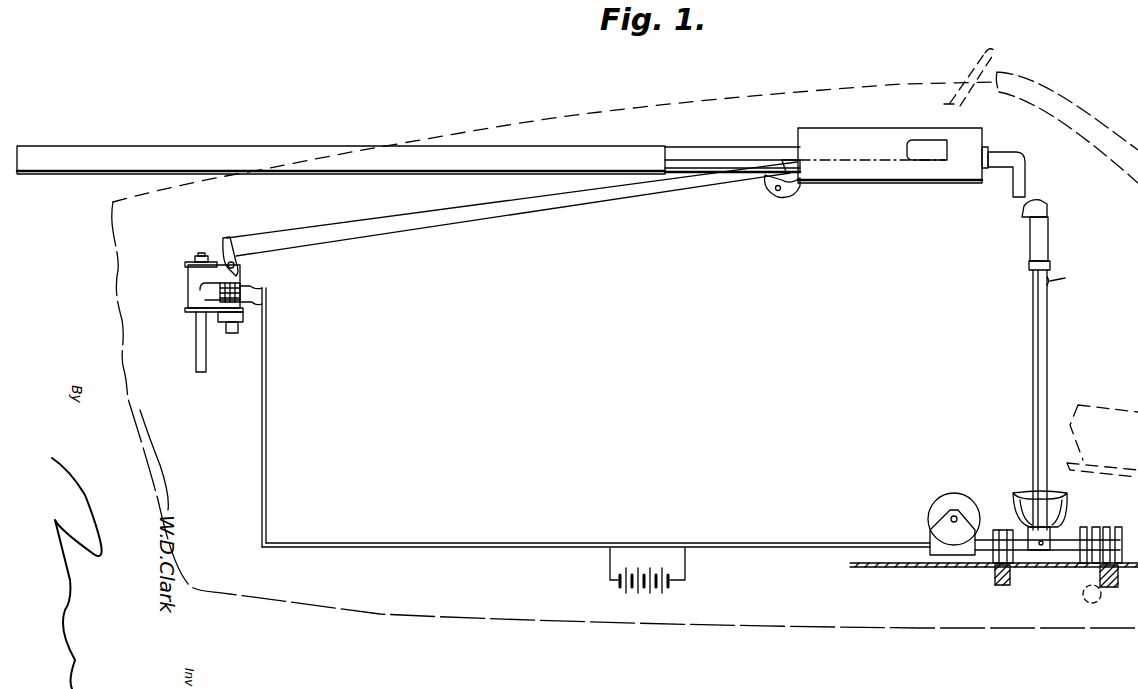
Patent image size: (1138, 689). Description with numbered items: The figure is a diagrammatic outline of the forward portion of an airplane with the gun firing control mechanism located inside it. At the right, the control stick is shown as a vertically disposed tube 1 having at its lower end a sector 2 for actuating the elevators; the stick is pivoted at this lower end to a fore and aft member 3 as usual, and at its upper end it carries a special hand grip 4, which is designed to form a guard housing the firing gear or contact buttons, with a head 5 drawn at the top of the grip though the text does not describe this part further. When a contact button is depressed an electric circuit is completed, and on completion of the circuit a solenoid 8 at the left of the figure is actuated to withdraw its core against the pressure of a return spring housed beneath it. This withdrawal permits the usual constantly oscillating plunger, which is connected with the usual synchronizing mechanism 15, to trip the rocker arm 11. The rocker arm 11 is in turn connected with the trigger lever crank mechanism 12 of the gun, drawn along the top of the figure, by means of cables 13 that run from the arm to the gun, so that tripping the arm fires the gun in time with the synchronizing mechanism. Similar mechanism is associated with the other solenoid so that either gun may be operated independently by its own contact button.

The vertically disposed tube 1 is at (1048, 372).
The sector 2 is at (1028, 495).
The fore and aft member 3 is at (1067, 545).
The hand grip 4 is at (1029, 245).
The head 5 is at (1050, 200).
The solenoid 8 is at (245, 313).
The rocker arm 11 is at (237, 247).
The trigger lever crank mechanism 12 is at (895, 173).
The cables 13 is at (343, 238).
The synchronizing mechanism 15 is at (188, 295).